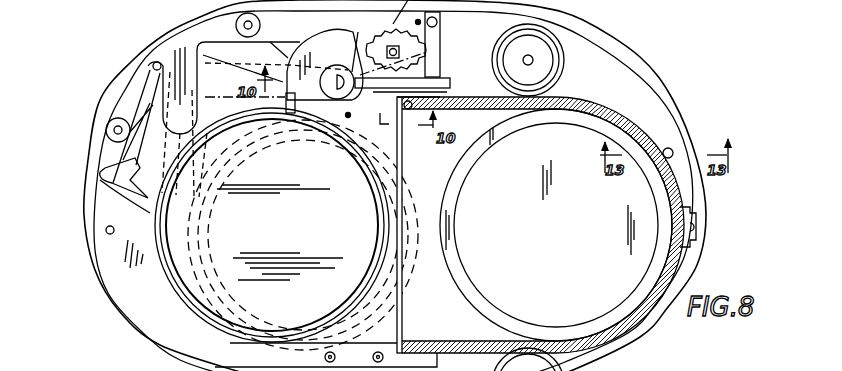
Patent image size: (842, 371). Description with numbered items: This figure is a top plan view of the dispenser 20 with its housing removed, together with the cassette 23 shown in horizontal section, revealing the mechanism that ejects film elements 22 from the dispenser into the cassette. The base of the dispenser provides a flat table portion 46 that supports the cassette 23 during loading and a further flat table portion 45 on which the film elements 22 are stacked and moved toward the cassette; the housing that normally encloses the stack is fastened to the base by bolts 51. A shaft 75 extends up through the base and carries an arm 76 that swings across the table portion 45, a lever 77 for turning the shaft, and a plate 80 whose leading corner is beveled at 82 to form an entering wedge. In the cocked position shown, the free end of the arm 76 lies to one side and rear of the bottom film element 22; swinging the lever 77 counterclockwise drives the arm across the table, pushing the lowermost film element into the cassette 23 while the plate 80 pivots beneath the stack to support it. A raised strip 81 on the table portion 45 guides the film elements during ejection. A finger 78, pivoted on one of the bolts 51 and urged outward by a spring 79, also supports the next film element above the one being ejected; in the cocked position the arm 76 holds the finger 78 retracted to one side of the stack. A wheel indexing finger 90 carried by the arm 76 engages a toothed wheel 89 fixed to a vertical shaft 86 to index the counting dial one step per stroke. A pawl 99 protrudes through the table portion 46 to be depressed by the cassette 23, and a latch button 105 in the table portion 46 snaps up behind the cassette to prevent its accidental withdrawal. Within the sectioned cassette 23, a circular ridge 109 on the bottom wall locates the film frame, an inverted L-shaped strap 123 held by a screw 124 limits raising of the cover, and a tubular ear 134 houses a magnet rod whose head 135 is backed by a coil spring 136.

The dispenser 20 is at (82, 213).
The film element 22 is at (164, 272).
The cassette 23 is at (608, 105).
The table portion 45 is at (303, 235).
The table portion 46 is at (673, 113).
The bolt 51 is at (152, 63).
The shaft 75 is at (337, 75).
The arm 76 is at (200, 53).
The lever 77 is at (430, 100).
The finger 78 is at (128, 166).
The spring 79 is at (107, 174).
The plate 80 is at (347, 45).
The raised strip 81 is at (167, 322).
The beveled corner 82 is at (297, 114).
The shaft 86 is at (399, 52).
The toothed wheel 89 is at (408, 43).
The wheel indexing finger 90 is at (349, 115).
The pawl 99 is at (407, 109).
The button 105 is at (678, 140).
The circular ridge 109 is at (467, 175).
The inverted L-shaped strap 123 is at (693, 213).
The screw 124 is at (695, 228).
The tubular ear 134 is at (561, 78).
The head 135 is at (549, 53).
The coil spring 136 is at (558, 63).